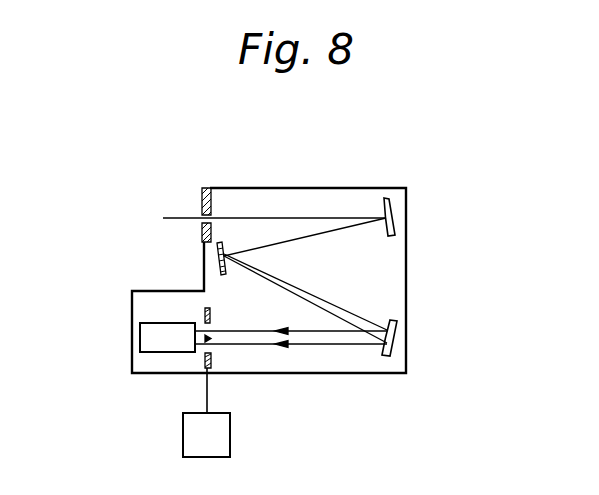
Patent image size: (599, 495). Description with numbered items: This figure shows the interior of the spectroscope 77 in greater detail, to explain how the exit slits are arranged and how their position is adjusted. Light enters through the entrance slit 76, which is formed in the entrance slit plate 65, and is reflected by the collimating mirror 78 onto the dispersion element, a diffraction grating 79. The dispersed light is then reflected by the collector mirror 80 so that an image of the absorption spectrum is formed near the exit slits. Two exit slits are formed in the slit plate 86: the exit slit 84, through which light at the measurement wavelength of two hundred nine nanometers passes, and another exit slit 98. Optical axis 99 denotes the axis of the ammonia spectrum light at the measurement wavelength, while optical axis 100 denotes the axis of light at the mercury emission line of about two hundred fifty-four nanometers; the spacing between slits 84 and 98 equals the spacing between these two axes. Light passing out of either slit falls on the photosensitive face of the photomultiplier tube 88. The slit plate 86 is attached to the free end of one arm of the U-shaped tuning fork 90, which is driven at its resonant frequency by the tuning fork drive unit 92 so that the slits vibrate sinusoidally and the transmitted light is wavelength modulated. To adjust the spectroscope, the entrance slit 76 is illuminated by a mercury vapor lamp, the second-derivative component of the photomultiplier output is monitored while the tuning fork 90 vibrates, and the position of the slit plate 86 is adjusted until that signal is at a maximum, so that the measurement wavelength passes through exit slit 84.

The entrance slit plate 65 is at (204, 192).
The entrance slit 76 is at (199, 216).
The spectroscope 77 is at (317, 188).
The collimating mirror 78 is at (388, 195).
The diffraction grating 79 is at (224, 275).
The collector mirror 80 is at (398, 336).
The exit slit 84 is at (210, 325).
The slit plate 86 is at (212, 362).
The photomultiplier tube 88 is at (147, 353).
The tuning fork 90 is at (206, 400).
The tuning fork drive unit 92 is at (231, 440).
The exit slit 98 is at (211, 356).
The optical axis 99 is at (277, 331).
The optical axis 100 is at (277, 345).